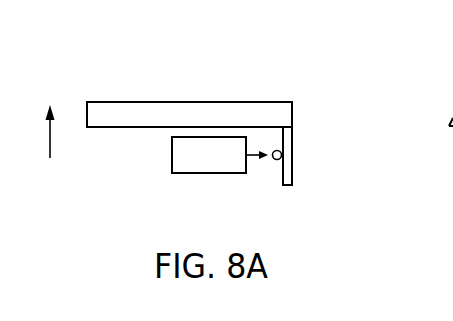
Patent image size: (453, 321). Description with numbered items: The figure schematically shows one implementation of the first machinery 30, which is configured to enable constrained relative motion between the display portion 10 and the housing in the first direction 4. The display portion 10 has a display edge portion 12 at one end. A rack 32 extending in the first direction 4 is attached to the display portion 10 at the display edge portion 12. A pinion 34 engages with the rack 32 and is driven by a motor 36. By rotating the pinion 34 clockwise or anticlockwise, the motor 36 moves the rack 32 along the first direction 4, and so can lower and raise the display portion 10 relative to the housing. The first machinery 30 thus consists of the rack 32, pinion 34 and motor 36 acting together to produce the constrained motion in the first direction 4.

The first direction 4 is at (48, 130).
The display portion 10 is at (137, 102).
The display edge portion 12 is at (292, 113).
The first machinery 30 is at (149, 161).
The rack 32 is at (292, 162).
The pinion 34 is at (277, 160).
The motor 36 is at (183, 176).